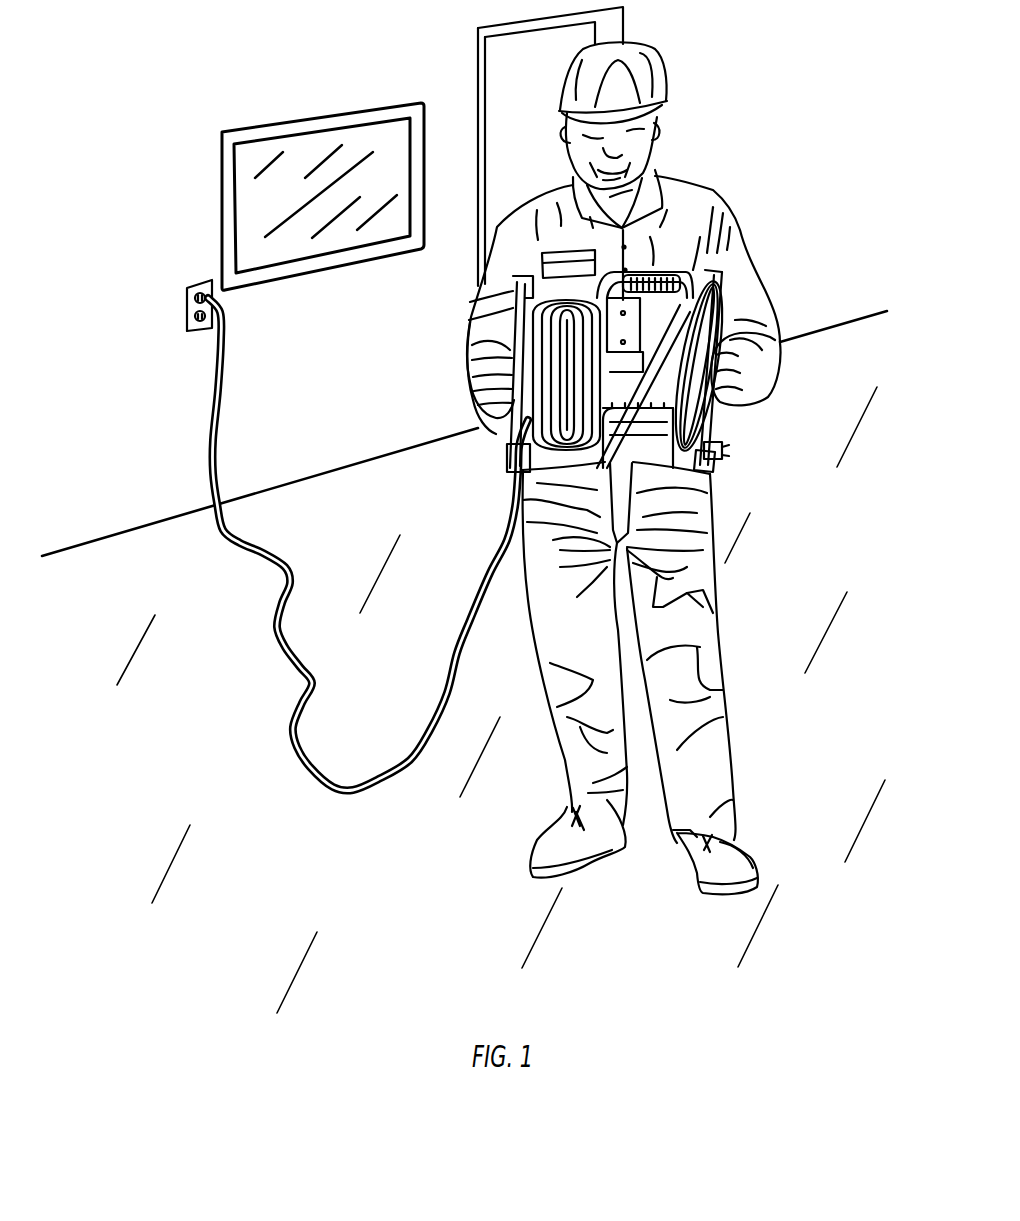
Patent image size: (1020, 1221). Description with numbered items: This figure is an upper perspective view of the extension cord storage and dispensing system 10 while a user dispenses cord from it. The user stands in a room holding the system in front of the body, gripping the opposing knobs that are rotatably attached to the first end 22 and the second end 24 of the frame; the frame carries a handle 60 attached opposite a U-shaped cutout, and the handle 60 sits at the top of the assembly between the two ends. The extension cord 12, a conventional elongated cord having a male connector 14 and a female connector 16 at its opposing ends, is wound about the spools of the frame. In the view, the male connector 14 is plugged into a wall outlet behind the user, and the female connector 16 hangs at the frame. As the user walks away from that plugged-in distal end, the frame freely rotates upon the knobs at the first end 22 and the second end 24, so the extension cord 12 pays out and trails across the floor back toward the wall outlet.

The extension cord storage and dispensing system 10 is at (713, 118).
The extension cord 12 is at (363, 801).
The male connector 14 is at (190, 286).
The female connector 16 is at (740, 472).
The first end 22 is at (504, 440).
The second end 24 is at (728, 298).
The handle 60 is at (693, 278).